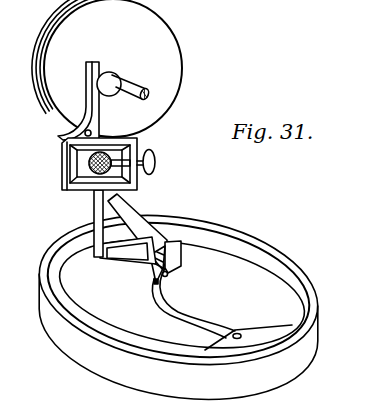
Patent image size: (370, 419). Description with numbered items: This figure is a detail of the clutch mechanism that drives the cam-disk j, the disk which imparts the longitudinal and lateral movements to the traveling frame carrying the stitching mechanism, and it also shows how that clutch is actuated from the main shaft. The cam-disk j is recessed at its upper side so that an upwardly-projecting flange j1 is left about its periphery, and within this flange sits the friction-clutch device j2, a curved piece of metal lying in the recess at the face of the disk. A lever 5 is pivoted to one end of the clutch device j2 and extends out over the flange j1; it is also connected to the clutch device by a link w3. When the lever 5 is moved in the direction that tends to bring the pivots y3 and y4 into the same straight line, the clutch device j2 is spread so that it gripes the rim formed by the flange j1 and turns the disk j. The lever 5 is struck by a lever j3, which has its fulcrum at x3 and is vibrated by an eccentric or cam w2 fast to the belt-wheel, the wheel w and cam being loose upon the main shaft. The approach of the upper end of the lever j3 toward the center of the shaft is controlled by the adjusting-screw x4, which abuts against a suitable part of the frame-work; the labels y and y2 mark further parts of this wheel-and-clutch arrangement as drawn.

The wheel y is at (107, 68).
The crank handle w is at (146, 91).
The eccentric or cam w2 is at (113, 96).
The fulcrum x3 is at (87, 129).
The adjusting-screw x4 is at (155, 163).
The lever j3 is at (61, 186).
The lever 5 is at (130, 213).
The stem y2 is at (110, 223).
The link w3 is at (128, 261).
The pivot y4 is at (169, 274).
The pivot y3 is at (241, 332).
The flange j1 is at (268, 256).
The friction-clutch device j2 is at (67, 279).
The cam-disk j is at (178, 336).